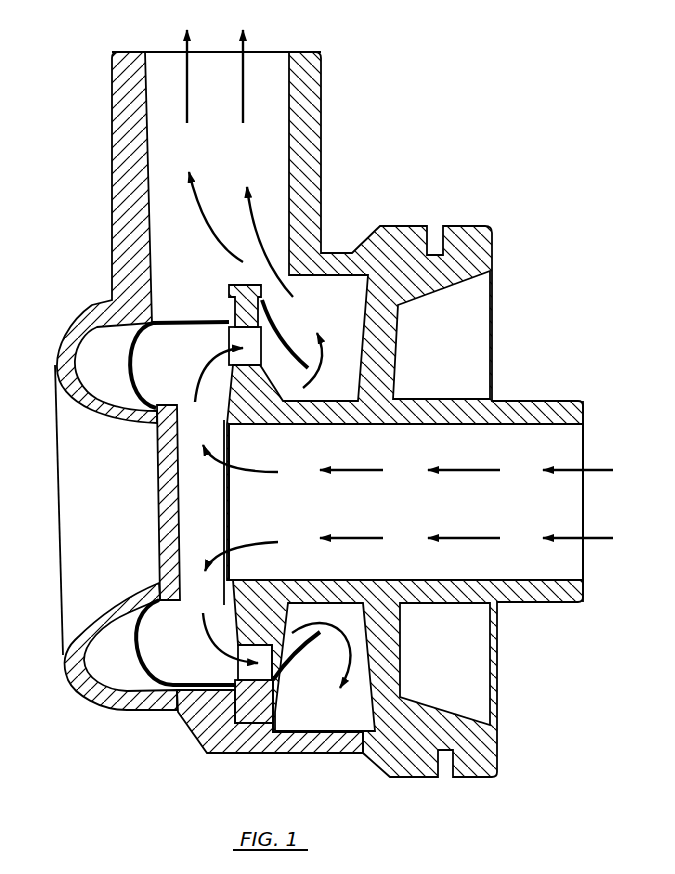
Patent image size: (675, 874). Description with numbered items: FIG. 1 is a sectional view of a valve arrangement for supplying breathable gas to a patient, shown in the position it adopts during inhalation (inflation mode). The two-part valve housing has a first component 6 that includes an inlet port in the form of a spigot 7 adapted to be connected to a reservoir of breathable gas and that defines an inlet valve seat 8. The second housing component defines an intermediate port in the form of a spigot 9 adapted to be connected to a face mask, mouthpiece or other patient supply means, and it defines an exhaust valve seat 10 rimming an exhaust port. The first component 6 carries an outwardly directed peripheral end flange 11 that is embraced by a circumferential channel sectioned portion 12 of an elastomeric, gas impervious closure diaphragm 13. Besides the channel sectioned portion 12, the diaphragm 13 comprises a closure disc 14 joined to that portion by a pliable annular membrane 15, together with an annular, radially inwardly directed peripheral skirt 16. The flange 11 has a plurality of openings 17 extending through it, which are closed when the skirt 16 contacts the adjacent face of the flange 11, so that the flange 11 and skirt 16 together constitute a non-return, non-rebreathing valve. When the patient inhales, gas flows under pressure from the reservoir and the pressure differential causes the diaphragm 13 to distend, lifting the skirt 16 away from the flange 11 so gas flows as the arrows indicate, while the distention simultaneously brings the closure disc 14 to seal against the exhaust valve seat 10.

The first component 6 is at (500, 383).
The spigot 7 is at (525, 435).
The inlet valve seat 8 is at (222, 422).
The spigot 9 is at (273, 131).
The exhaust valve seat 10 is at (155, 576).
The peripheral end flange 11 is at (255, 705).
The channel sectioned portion 12 is at (228, 287).
The closure diaphragm 13 is at (143, 448).
The closure disc 14 is at (167, 488).
The annular membrane 15 is at (133, 675).
The peripheral skirt 16 is at (288, 672).
The openings 17 is at (250, 673).